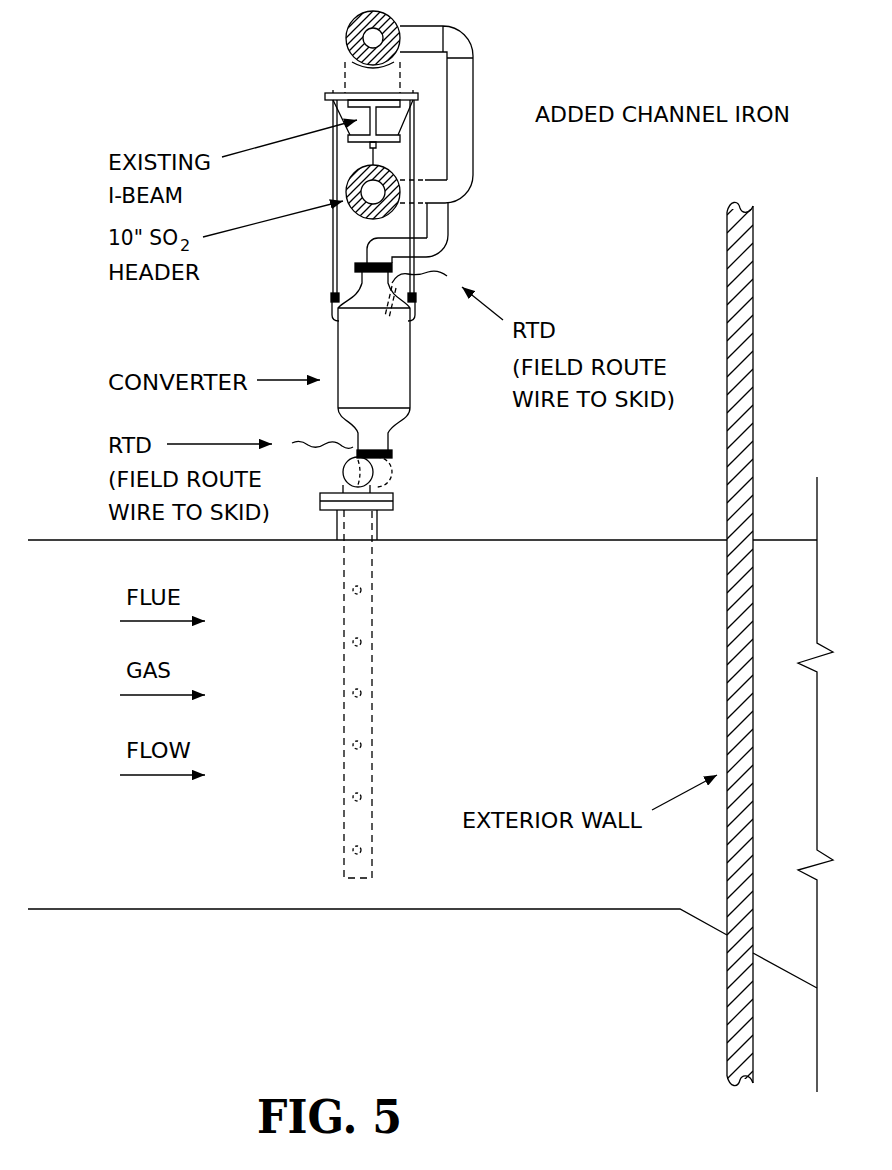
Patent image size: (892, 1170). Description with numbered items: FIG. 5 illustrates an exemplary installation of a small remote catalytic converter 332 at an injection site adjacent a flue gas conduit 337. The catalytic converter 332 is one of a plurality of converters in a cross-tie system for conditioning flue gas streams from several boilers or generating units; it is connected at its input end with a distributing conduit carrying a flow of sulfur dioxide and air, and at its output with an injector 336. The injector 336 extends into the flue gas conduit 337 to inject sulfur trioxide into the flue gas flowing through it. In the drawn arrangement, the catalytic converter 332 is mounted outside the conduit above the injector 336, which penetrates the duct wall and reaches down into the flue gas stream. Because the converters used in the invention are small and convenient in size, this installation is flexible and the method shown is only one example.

The catalytic converter 332 is at (340, 338).
The injector 336 is at (372, 595).
The flue gas conduit 337 is at (633, 909).